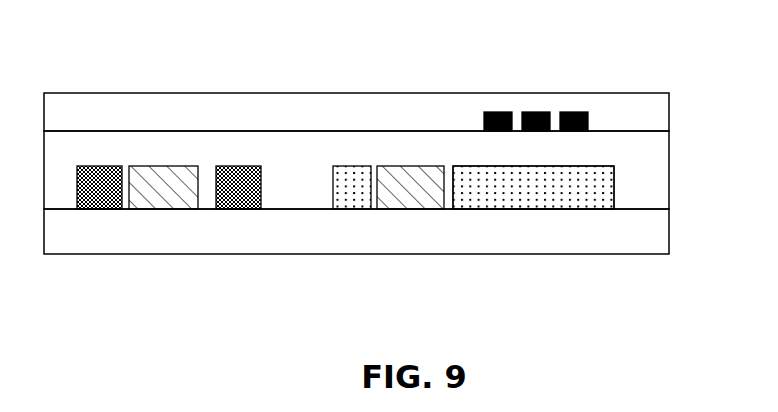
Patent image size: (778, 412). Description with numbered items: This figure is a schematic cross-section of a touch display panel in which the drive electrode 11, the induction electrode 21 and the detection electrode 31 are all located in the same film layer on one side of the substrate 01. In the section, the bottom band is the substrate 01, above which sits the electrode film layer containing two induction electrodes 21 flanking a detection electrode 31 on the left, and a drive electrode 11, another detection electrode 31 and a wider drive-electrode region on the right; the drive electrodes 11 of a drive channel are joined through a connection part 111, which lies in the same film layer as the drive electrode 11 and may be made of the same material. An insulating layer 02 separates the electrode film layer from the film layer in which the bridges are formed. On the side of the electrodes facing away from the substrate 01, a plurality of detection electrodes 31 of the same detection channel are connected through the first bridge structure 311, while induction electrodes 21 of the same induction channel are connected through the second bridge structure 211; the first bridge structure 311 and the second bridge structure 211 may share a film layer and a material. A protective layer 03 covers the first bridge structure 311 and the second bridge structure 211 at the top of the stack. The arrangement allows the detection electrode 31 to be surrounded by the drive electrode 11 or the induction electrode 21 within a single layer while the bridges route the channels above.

The substrate 01 is at (670, 232).
The insulating layer 02 is at (660, 156).
The protective layer 03 is at (660, 119).
The drive electrode 11 is at (352, 187).
The connection part 111 is at (529, 186).
The induction electrode 21 is at (97, 202).
The second bridge structure 211 is at (490, 112).
The detection electrode 31 is at (163, 188).
The first bridge structure 311 is at (533, 112).